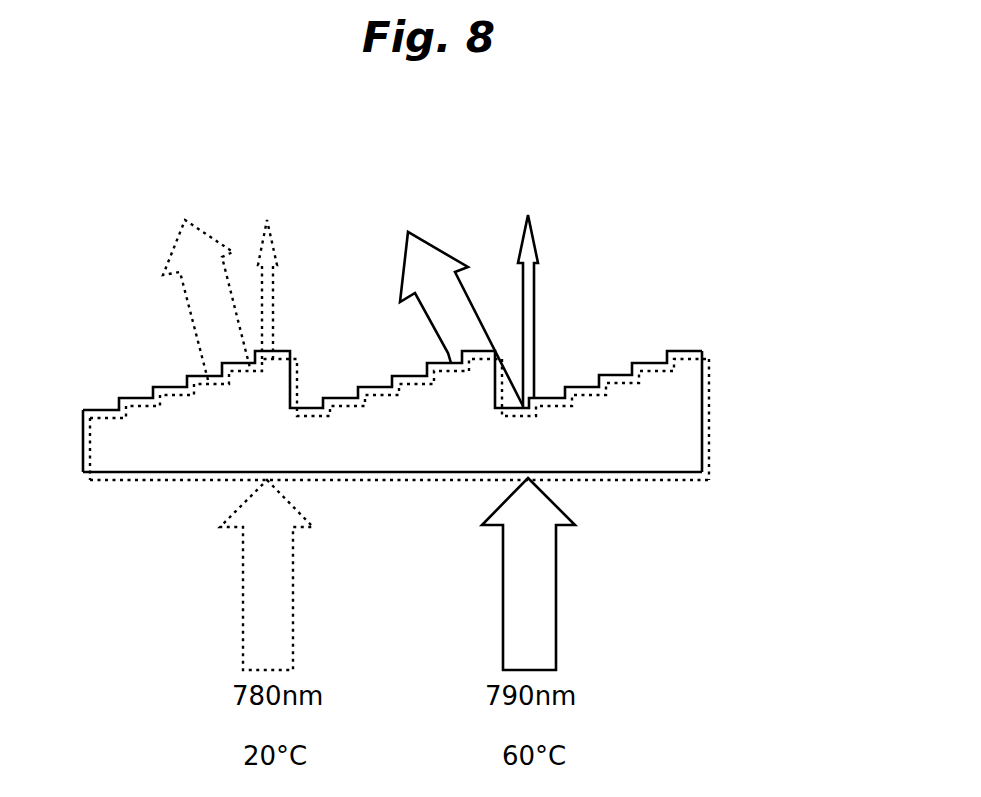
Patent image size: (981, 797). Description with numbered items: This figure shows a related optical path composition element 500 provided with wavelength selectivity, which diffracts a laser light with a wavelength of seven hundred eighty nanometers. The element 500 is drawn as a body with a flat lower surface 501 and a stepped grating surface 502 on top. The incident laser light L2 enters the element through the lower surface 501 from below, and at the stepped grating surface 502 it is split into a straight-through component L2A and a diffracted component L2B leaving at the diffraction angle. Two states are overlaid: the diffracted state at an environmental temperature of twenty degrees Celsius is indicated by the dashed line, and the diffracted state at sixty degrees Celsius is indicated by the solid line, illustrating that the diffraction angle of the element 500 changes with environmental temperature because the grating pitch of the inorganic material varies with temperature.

The diffractive optical element (stepped blazed grating substrate) 500 is at (446, 402).
The bottom surface / incident surface of element 501 is at (597, 472).
The stepped diffraction grating surface 502 is at (690, 350).
The incident light beam L2 is at (243, 613).
The zeroth-order transmitted light L2A is at (270, 228).
The first-order diffracted light L2B is at (192, 225).